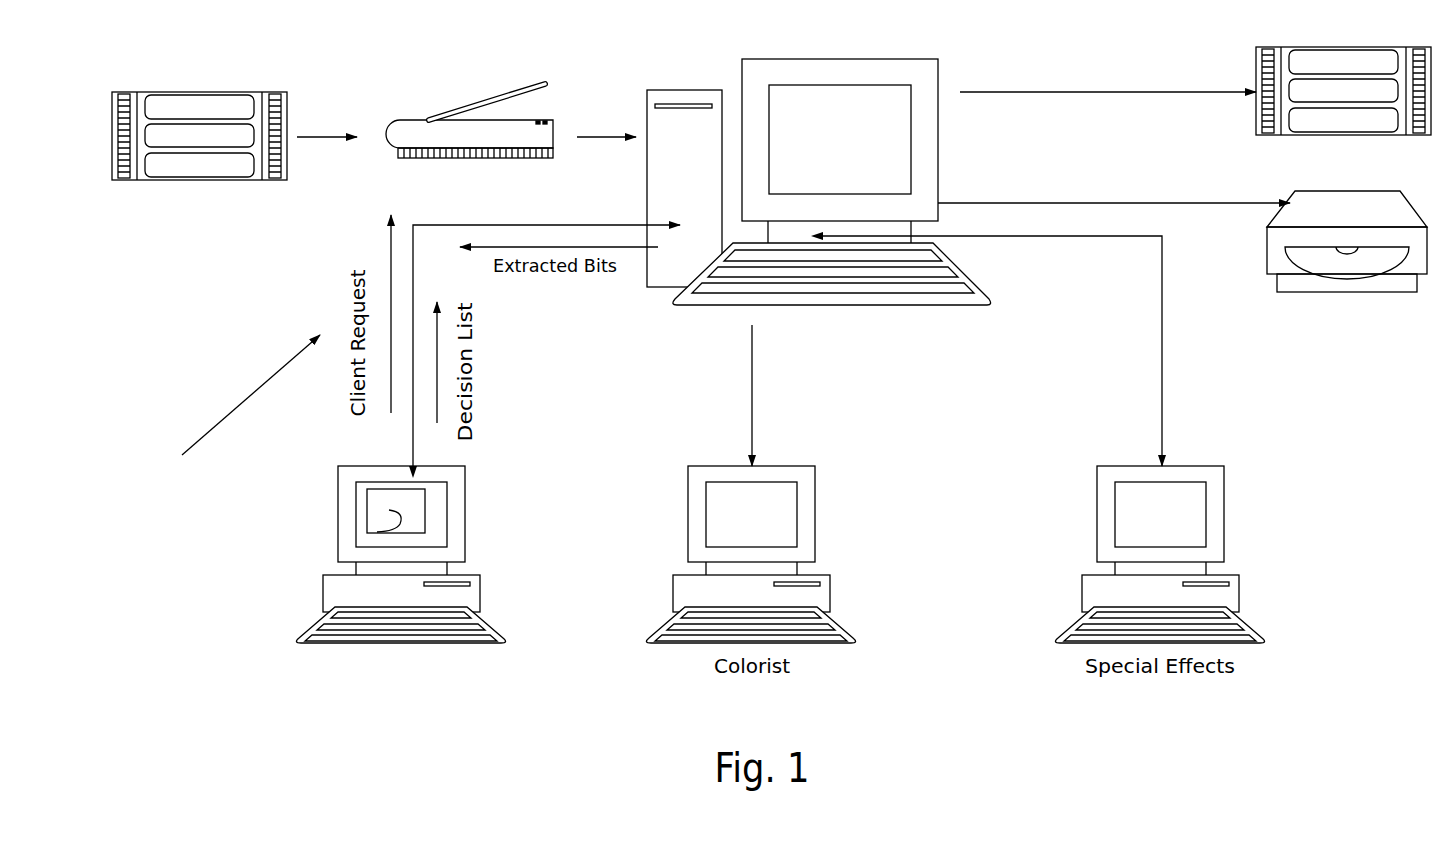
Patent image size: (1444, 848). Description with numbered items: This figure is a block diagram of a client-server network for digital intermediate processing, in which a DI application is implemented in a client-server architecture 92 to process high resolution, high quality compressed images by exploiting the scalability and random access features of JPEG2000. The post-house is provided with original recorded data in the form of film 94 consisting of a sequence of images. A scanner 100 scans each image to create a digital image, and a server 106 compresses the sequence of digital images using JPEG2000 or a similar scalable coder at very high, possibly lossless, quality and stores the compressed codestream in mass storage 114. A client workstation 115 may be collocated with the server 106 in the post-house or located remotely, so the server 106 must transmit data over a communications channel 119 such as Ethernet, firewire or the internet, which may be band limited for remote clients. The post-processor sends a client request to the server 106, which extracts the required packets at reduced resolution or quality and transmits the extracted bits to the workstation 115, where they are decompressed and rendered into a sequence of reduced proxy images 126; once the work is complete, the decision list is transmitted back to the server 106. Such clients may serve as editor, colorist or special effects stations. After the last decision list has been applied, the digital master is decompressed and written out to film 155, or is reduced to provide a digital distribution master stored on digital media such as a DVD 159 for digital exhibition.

The client-server architecture 92 is at (233, 406).
The film 94 is at (215, 92).
The scanner 100 is at (460, 115).
The server 106 is at (915, 70).
The mass storage 114 is at (672, 93).
The client workstation 115 is at (401, 548).
The communications channel 119 is at (513, 223).
The reduced proxy images 126 is at (397, 531).
The film 155 is at (1256, 70).
The DVD 159 is at (1317, 285).